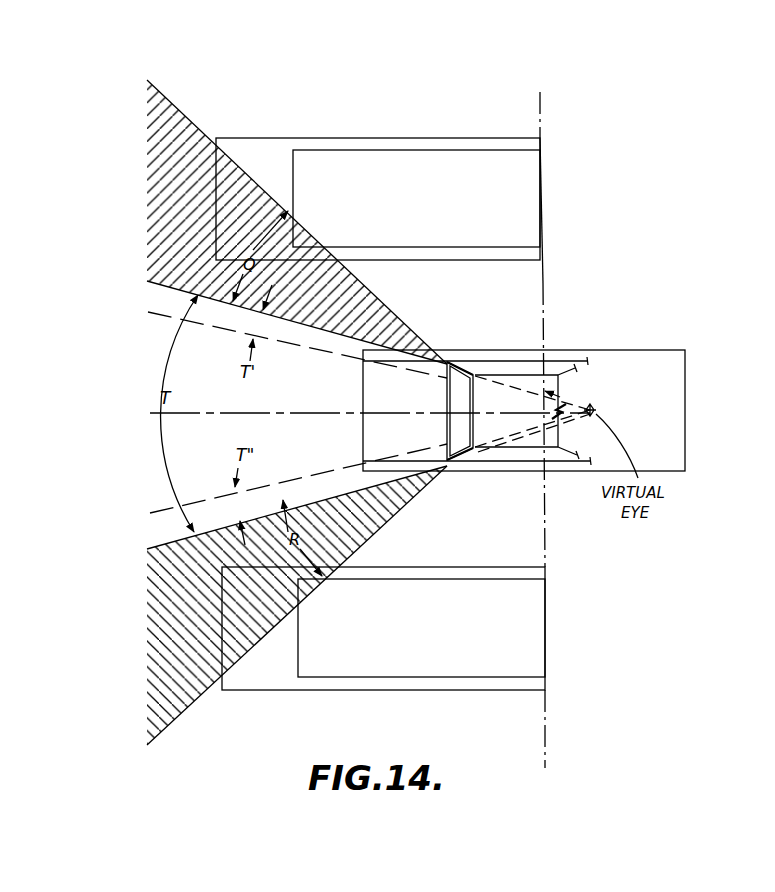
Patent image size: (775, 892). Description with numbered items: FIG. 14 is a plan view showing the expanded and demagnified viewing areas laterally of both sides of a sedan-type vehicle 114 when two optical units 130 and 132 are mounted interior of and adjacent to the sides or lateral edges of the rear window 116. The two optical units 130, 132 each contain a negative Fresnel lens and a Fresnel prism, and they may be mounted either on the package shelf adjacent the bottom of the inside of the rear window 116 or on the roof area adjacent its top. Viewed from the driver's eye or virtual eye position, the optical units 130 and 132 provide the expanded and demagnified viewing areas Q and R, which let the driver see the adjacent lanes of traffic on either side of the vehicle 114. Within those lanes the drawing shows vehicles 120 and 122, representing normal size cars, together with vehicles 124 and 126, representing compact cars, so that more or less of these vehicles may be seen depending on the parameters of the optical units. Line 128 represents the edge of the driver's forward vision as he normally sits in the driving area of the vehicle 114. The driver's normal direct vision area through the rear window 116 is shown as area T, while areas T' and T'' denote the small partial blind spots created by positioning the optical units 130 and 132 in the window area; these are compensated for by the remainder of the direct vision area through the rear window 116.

The vehicle 114 is at (637, 346).
The rear window 116 is at (462, 397).
The vehicle 120 is at (285, 166).
The vehicle 122 is at (292, 674).
The vehicle 124 is at (392, 186).
The vehicle 126 is at (464, 624).
The line 128 is at (543, 283).
The optical unit 130 is at (457, 369).
The optical unit 132 is at (460, 450).